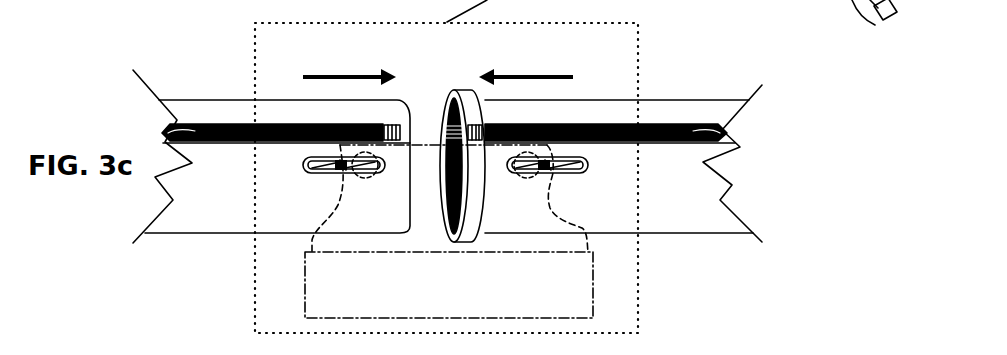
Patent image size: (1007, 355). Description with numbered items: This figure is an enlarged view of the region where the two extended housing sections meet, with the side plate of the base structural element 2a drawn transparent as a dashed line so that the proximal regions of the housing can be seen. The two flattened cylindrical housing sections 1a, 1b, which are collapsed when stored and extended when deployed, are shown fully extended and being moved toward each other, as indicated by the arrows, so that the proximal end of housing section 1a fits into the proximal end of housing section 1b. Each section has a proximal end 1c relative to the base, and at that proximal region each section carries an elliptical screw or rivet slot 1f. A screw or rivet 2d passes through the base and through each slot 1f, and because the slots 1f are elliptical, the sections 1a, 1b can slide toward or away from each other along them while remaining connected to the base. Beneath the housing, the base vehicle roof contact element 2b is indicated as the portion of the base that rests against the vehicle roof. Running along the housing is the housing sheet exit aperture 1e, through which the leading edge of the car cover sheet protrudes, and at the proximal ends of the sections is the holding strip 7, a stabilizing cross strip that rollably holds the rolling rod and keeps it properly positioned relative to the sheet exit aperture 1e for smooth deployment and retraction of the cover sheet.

The housing section 1a is at (395, 72).
The housing section 1b is at (677, 72).
The proximal end 1c is at (452, 112).
The housing sheet exit aperture 1e is at (166, 133).
The elliptical screw or rivet slot 1f is at (340, 173).
The base structural element 2a is at (313, 235).
The base vehicle roof contact element 2b is at (608, 252).
The screw or rivet 2d is at (358, 176).
The holding strip 7 is at (446, 134).